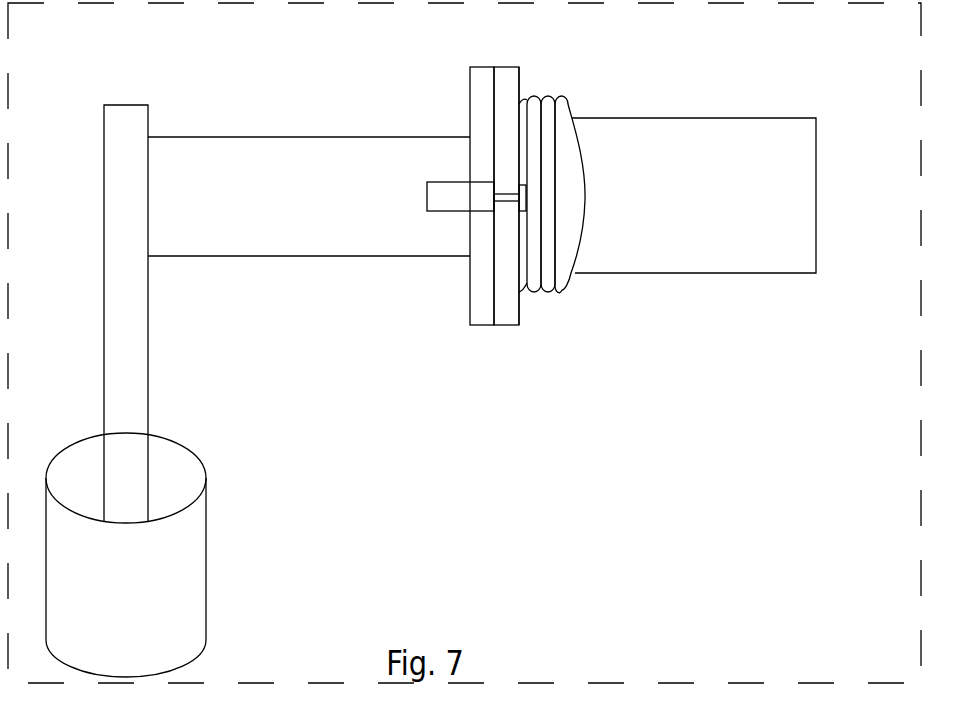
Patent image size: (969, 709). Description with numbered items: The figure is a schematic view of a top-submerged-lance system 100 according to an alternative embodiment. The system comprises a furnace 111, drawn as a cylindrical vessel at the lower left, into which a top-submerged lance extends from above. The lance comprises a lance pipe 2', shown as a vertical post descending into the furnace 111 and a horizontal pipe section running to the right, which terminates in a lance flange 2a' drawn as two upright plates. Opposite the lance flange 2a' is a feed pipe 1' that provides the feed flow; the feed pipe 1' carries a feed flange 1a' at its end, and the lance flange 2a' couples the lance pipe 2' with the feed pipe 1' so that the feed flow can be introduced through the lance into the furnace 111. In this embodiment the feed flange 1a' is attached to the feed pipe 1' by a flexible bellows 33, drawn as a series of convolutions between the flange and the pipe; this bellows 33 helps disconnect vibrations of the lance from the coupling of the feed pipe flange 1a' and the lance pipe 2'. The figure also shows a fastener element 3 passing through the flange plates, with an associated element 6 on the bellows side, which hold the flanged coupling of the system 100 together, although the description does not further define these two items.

The feed pipe 1' is at (694, 264).
The feed flange 1a' is at (573, 190).
The lance pipe 2' is at (287, 313).
The lance flange 2a' is at (458, 246).
The fastening bolt 3 is at (420, 195).
The nut 6 is at (526, 200).
The flexible bellows 33 is at (541, 284).
The top-submerged-lance system 100 is at (704, 549).
The furnace 111 is at (118, 607).